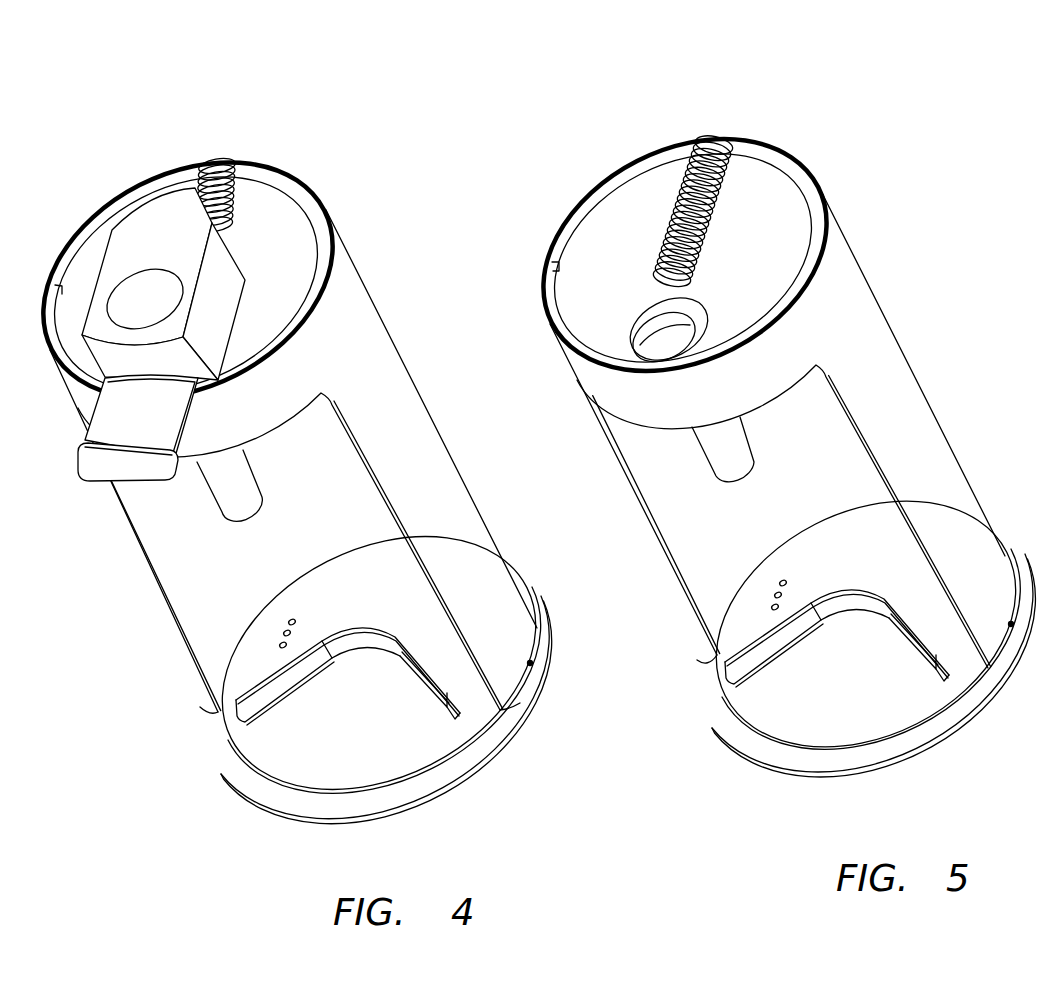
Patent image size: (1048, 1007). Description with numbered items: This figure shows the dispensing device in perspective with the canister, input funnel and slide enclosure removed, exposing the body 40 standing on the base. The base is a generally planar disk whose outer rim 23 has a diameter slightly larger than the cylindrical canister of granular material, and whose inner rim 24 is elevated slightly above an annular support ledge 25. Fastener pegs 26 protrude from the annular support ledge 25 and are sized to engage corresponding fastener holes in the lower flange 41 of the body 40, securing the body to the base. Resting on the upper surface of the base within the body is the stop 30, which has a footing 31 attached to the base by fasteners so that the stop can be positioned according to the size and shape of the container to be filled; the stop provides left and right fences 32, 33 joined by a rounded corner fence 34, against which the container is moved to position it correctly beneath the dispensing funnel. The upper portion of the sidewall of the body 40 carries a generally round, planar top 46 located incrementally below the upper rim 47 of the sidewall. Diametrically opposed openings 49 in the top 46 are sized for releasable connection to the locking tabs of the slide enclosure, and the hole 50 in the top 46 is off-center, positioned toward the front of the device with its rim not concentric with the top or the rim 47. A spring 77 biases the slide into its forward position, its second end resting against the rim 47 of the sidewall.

In FIG. 4, the outer rim 23 is at (508, 747).
In FIG. 4, the inner rim 24 is at (433, 772).
In FIG. 5, the annular support ledge 25 is at (717, 710).
In FIG. 4, the fastener pegs 26 is at (533, 653).
In FIG. 5, the stop 30 is at (853, 635).
In FIG. 4, the footing 31 is at (443, 653).
In FIG. 5, the footing 31 is at (922, 608).
In FIG. 4, the left fence 32 is at (277, 683).
In FIG. 4, the right fence 33 is at (413, 685).
In FIG. 4, the rounded corner fence 34 is at (367, 620).
In FIG. 4, the body 40 is at (377, 298).
In FIG. 5, the lower flange 41 is at (1005, 540).
In FIG. 4, the top 46 is at (280, 232).
In FIG. 4, the upper rim 47 is at (248, 160).
In FIG. 5, the openings 49 is at (550, 265).
In FIG. 5, the hole 50 is at (678, 340).
In FIG. 5, the spring 77 is at (715, 227).